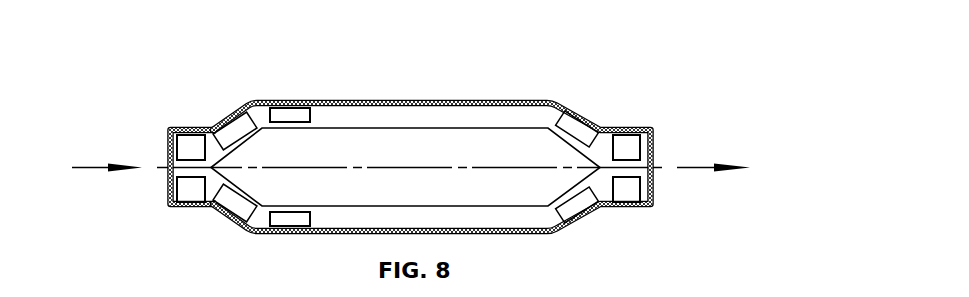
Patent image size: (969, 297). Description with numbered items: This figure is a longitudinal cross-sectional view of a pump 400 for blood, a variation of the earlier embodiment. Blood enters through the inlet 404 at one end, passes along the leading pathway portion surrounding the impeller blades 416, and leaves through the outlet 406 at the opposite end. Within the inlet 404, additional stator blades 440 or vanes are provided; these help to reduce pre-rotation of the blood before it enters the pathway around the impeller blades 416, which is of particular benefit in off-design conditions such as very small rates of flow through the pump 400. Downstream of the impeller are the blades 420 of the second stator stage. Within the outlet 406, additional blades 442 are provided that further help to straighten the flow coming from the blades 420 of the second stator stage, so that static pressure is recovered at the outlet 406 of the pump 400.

The pump 400 is at (533, 83).
The inlet 404 is at (166, 178).
The outlet 406 is at (645, 150).
The impeller blades 416 is at (238, 116).
The blades of the second stator stage 420 is at (578, 129).
The stator blades 440 is at (196, 190).
The blades 442 is at (632, 185).